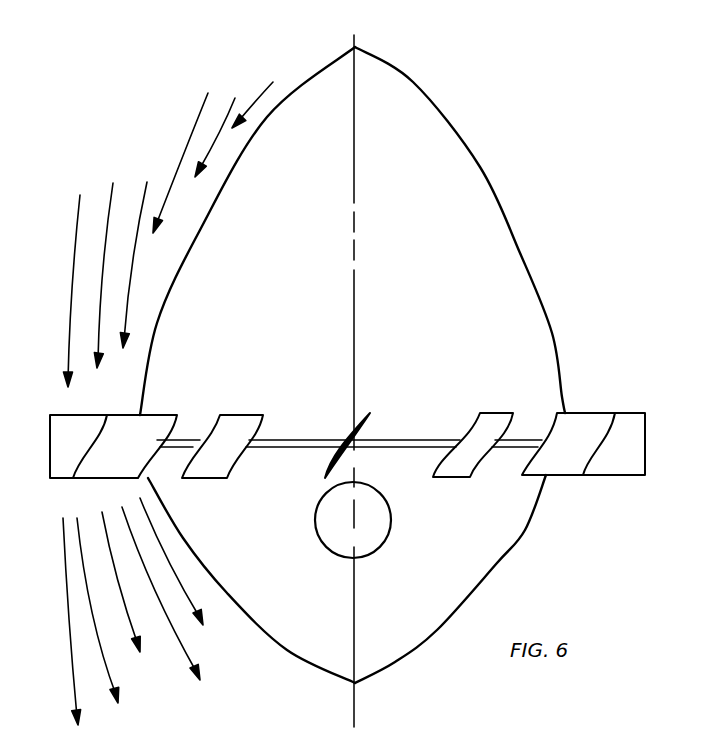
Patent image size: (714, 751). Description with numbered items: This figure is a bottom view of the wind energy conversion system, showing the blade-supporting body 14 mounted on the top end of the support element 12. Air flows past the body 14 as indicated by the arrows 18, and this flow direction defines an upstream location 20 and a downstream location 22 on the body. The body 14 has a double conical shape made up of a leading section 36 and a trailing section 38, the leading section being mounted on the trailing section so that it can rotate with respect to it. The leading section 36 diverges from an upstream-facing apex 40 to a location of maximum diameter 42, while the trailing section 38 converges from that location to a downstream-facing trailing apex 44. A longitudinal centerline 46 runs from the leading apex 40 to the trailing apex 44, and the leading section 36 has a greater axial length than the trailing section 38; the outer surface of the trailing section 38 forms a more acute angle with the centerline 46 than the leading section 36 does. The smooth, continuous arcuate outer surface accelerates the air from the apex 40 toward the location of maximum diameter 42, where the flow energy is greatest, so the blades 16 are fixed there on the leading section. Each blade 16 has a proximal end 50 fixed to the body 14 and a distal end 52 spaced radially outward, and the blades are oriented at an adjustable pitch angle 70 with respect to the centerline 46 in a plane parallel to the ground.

The support element 12 is at (380, 523).
The blade-supporting body 14 is at (387, 365).
The blade 16 is at (580, 423).
The arrows indicating air flow 18 is at (70, 298).
The upstream location 20 is at (460, 230).
The downstream location 22 is at (293, 689).
The leading section 36 is at (484, 166).
The trailing section 38 is at (462, 575).
The upstream-facing apex 40 is at (357, 47).
The location of maximum diameter 42 is at (523, 437).
The trailing apex 44 is at (353, 683).
The longitudinal centerline 46 is at (353, 155).
The proximal end 50 is at (455, 438).
The distal end 52 is at (473, 478).
The pitch angle 70 is at (392, 401).